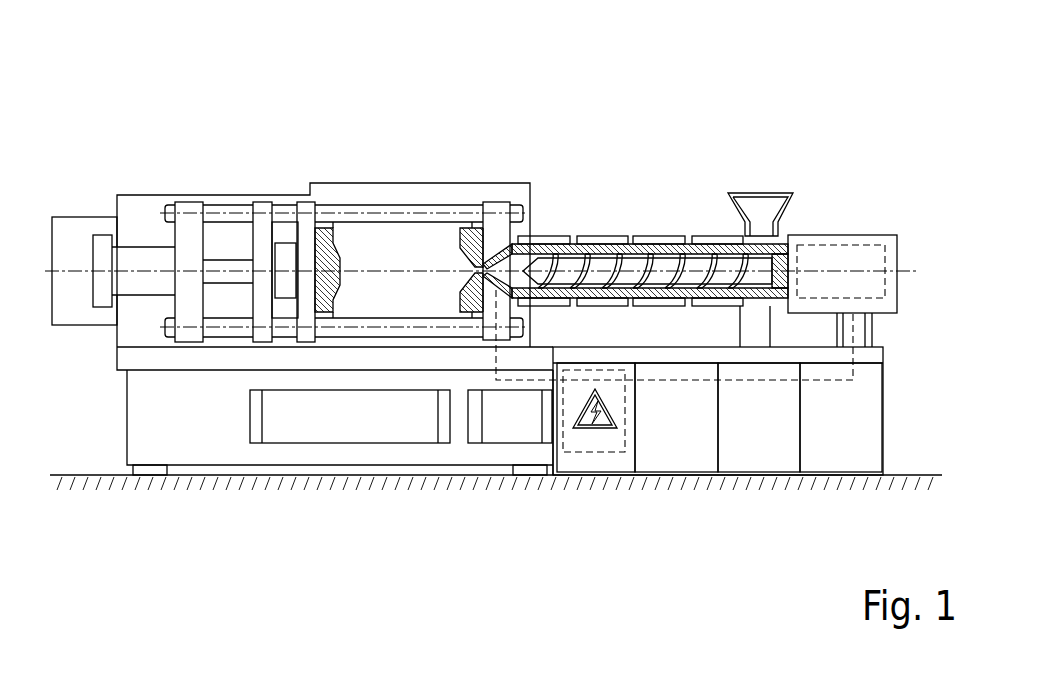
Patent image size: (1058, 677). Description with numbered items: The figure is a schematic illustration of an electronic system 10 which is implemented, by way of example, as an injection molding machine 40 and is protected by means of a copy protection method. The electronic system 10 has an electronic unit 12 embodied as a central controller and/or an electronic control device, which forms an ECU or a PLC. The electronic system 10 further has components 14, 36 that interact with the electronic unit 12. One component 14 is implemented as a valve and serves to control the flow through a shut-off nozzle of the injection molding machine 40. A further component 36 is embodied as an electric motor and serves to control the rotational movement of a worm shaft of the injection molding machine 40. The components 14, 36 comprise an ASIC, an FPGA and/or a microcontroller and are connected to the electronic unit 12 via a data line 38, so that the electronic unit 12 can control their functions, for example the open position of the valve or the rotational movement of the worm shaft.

The electronic system 10 is at (612, 110).
The electronic unit 12 is at (593, 453).
The component 14 is at (493, 242).
The component 36 is at (845, 243).
The data line 38 is at (763, 381).
The injection molding machine 40 is at (493, 140).